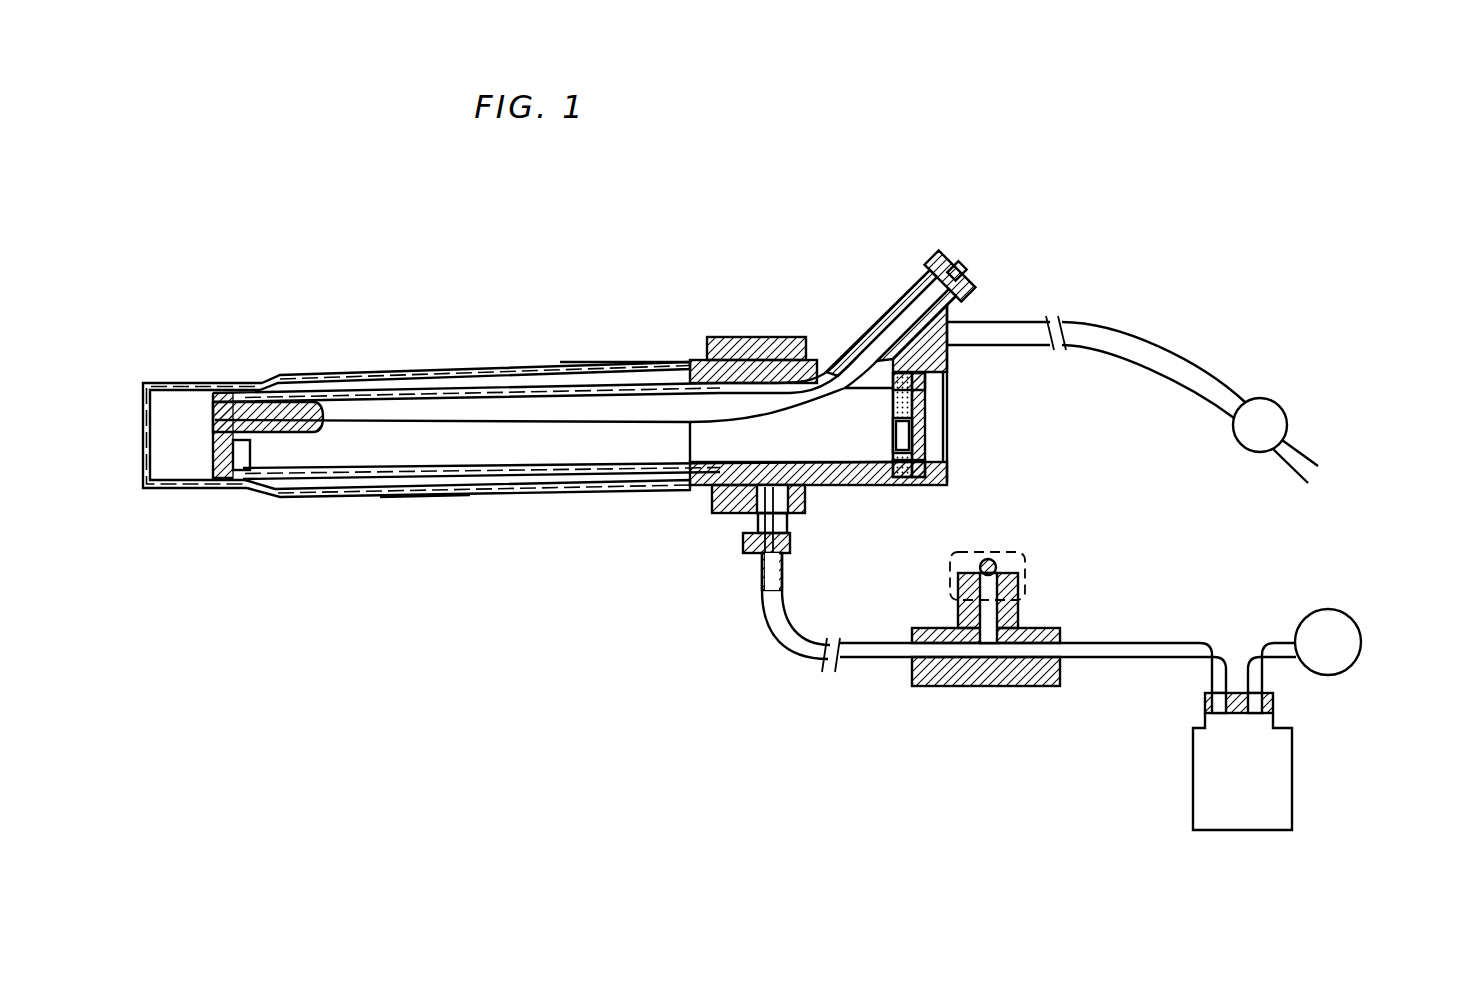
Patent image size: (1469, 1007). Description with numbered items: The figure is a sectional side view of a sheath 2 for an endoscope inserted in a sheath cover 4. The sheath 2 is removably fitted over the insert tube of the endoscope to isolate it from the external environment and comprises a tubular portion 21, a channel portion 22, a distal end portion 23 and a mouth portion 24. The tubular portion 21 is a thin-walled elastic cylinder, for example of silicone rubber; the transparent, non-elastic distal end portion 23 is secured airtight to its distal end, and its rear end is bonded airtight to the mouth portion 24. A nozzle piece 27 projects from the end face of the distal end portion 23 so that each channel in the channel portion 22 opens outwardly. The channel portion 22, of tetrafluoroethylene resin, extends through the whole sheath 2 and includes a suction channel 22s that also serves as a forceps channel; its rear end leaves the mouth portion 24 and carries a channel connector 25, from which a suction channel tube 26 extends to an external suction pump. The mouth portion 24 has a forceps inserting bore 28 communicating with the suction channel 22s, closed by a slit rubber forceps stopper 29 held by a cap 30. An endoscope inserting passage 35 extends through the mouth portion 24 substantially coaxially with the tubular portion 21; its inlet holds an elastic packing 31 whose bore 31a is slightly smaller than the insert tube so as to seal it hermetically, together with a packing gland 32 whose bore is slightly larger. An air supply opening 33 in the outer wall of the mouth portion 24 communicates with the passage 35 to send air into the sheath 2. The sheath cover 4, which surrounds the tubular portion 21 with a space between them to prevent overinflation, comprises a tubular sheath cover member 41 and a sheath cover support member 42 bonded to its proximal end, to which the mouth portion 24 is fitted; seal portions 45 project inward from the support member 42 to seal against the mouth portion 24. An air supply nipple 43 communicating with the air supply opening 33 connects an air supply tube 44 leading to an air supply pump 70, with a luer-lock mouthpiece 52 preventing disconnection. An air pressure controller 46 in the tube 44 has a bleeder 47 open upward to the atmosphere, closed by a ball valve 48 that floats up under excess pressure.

The sheath 2 is at (619, 372).
The sheath cover 4 is at (427, 508).
The tubular portion 21 is at (340, 380).
The channel portion 22 is at (422, 398).
The suction channel 22s is at (270, 402).
The distal end portion 23 is at (220, 395).
The mouth portion 24 is at (773, 370).
The channel connector 25 is at (1262, 418).
The suction channel tube 26 is at (1280, 462).
The nozzle piece 27 is at (186, 386).
The forceps inserting bore 28 is at (920, 303).
The forceps stopper 29 is at (970, 278).
The cap 30 is at (945, 254).
The packing 31 is at (905, 432).
The bore 31a is at (912, 447).
The packing gland 32 is at (915, 377).
The air supply opening 33 is at (818, 476).
The endoscope inserting passage 35 is at (866, 448).
The tubular sheath cover member 41 is at (517, 492).
The sheath cover support member 42 is at (722, 514).
The air supply nipple 43 is at (745, 535).
The air supply tube 44 is at (856, 668).
The seal portions 45 is at (792, 522).
The air pressure controller 46 is at (970, 688).
The bleeder 47 is at (1000, 584).
The ball valve 48 is at (995, 556).
The mouthpiece 52 is at (757, 573).
The air supply pump 70 is at (1342, 692).